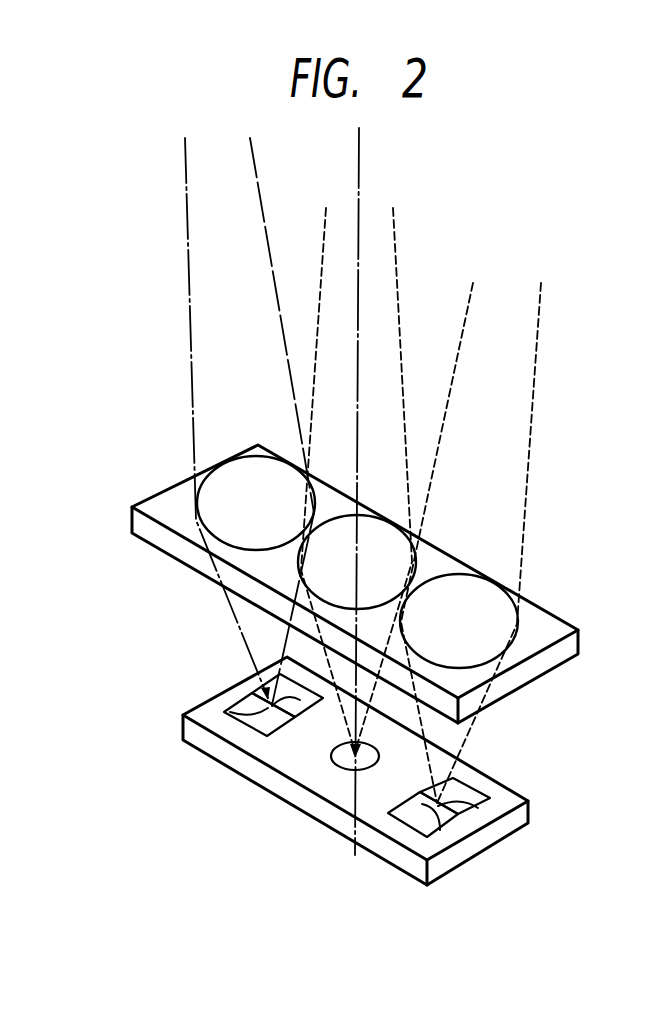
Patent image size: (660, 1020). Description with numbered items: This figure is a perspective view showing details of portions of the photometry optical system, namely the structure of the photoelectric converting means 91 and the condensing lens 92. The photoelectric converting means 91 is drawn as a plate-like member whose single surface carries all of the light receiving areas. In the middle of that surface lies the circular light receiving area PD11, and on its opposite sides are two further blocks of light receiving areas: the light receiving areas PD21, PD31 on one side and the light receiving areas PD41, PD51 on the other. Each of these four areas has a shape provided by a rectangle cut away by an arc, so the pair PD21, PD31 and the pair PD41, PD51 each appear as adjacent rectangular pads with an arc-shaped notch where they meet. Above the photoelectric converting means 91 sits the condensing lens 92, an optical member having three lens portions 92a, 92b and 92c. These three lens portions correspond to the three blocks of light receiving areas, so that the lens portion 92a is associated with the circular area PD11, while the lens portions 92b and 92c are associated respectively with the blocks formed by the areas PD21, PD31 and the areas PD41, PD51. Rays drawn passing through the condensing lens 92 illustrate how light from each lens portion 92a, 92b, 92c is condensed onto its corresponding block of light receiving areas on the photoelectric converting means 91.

The condensing lens 92 is at (332, 584).
The lens portion 92a is at (357, 539).
The lens portion 92b is at (256, 480).
The lens portion 92c is at (459, 601).
The photoelectric converting means 91 is at (333, 771).
The circular light receiving area PD11 is at (333, 757).
The light receiving area PD21 is at (275, 672).
The light receiving area PD31 is at (225, 712).
The light receiving area PD41 is at (465, 793).
The light receiving area PD51 is at (410, 813).